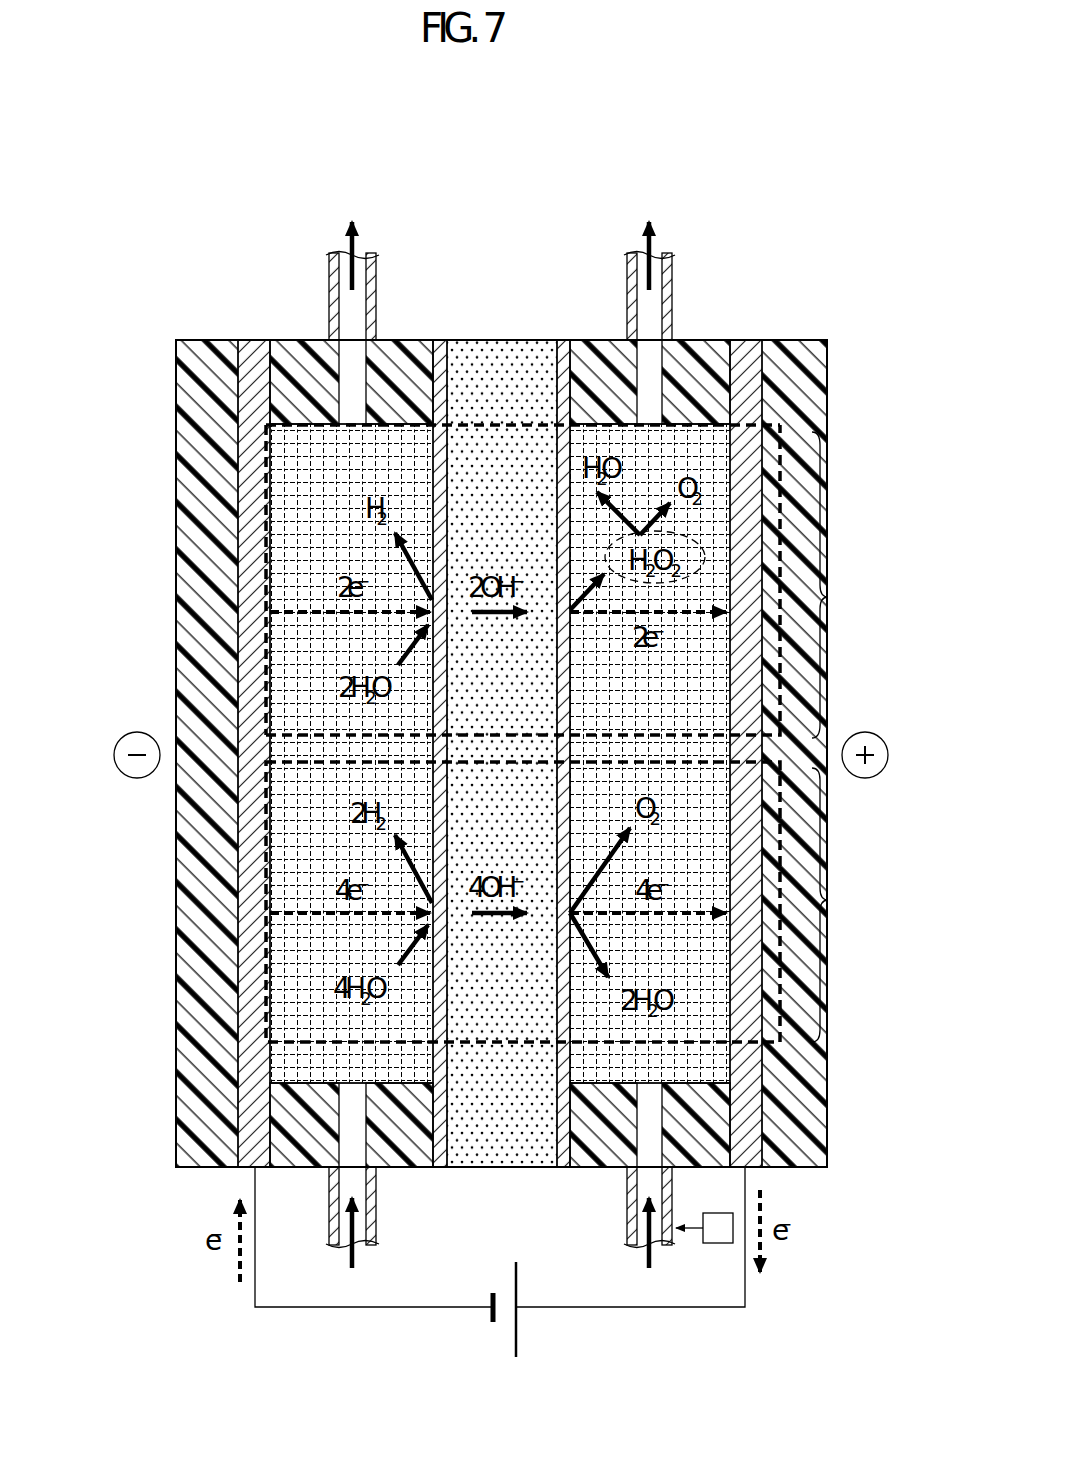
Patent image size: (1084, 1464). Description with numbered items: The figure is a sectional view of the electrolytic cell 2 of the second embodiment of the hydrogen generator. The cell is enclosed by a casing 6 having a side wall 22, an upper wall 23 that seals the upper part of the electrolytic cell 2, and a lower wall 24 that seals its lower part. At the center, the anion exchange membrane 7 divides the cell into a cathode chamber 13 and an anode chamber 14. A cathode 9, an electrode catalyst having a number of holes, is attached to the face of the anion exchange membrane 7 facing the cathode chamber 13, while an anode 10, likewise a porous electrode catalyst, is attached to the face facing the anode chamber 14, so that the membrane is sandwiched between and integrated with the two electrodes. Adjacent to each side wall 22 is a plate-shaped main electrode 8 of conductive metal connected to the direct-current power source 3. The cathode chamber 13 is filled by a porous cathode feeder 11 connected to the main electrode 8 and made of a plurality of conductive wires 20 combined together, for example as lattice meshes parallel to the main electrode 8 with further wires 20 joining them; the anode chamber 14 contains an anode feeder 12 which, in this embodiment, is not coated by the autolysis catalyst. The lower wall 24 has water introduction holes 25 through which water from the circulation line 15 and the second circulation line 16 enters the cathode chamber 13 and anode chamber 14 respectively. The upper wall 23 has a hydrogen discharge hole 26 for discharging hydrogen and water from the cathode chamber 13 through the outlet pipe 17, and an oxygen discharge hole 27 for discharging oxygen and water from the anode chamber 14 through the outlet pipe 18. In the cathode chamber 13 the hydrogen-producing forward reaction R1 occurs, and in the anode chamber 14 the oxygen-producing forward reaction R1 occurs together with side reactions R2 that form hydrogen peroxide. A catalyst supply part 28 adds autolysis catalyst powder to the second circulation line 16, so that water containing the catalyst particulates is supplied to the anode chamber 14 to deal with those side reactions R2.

The electrolytic cell 2 is at (834, 295).
The direct-current power source 3 is at (517, 1330).
The casing 6 is at (835, 383).
The anion exchange membrane 7 is at (503, 355).
The main electrode 8 is at (252, 614).
The cathode 9 is at (438, 338).
The anode 10 is at (563, 338).
The cathode feeder 11 is at (298, 502).
The anode feeder 12 is at (700, 670).
The cathode chamber 13 is at (268, 458).
The anode chamber 14 is at (716, 445).
The circulation line 15 is at (330, 1205).
The second circulation line 16 is at (672, 1206).
The anode outlet pipe 17 is at (330, 300).
The cathode outlet pipe 18 is at (672, 302).
The conductive wires 20 is at (266, 866).
The side wall 22 is at (204, 963).
The upper wall 23 is at (717, 342).
The lower wall 24 is at (607, 1150).
The water introduction holes 25 is at (355, 1142).
The hydrogen discharge hole 26 is at (355, 372).
The oxygen discharge hole 27 is at (652, 372).
The catalyst supply part 28 is at (717, 1244).
The forward reaction R1 is at (828, 900).
The side reactions R2 is at (828, 597).